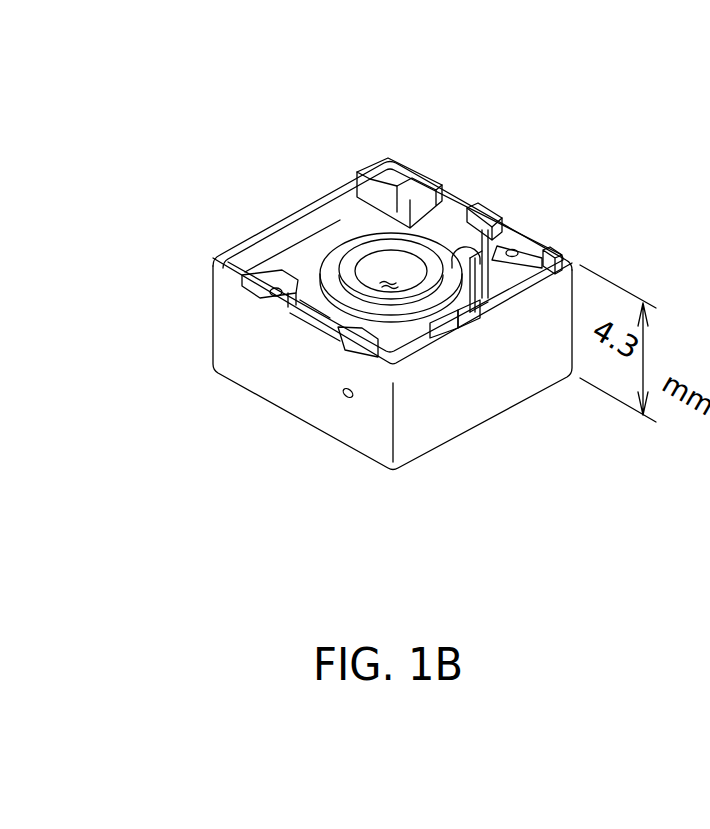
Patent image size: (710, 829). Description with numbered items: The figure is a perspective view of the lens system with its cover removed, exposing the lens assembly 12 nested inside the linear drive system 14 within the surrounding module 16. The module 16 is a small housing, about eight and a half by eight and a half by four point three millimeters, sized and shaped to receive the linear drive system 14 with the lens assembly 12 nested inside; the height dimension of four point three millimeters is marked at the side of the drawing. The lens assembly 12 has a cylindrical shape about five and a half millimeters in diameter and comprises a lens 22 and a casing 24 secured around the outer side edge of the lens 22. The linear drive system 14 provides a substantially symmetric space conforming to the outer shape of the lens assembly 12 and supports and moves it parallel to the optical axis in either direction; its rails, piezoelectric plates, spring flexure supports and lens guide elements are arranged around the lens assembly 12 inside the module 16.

The lens assembly 12 is at (357, 248).
The linear drive system 14 is at (297, 267).
The module 16 is at (254, 427).
The lens 22 is at (387, 265).
The casing 24 is at (328, 311).